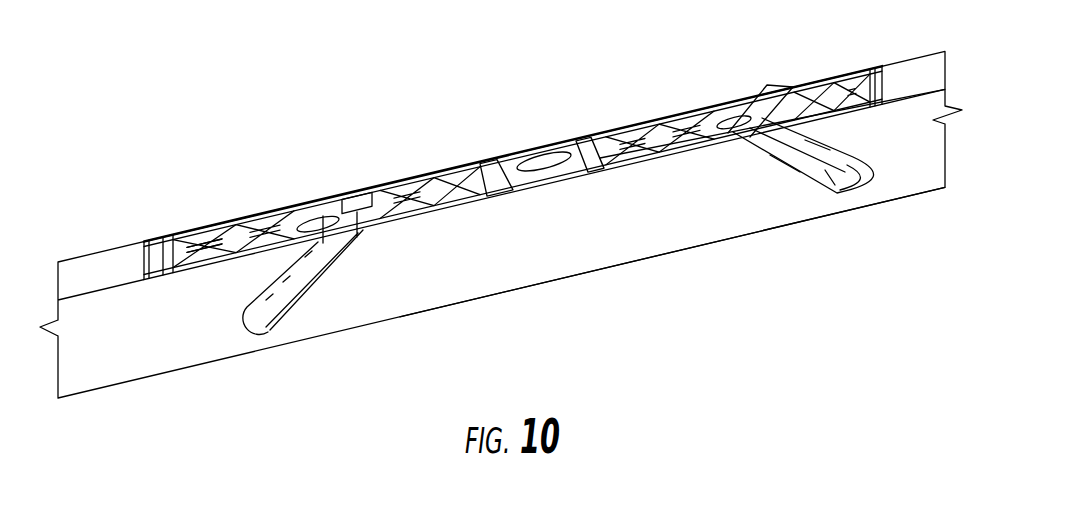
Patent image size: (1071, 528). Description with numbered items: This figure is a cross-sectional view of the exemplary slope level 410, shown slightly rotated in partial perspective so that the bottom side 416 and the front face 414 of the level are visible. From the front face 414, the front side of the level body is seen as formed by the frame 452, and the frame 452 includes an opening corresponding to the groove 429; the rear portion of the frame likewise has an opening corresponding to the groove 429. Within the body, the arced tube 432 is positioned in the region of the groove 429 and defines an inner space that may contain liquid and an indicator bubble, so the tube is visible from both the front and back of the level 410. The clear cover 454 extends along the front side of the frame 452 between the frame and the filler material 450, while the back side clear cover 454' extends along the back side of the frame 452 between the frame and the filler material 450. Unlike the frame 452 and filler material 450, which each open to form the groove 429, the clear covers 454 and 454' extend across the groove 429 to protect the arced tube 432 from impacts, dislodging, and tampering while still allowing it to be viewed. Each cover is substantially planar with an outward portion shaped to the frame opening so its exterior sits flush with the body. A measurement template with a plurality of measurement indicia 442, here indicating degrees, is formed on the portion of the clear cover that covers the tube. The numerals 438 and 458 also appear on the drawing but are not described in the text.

The slope level 410 is at (323, 404).
The front face 414 is at (638, 233).
The bottom side 416 is at (543, 287).
The groove/aperture 429 is at (287, 220).
The arced tube 432 is at (765, 102).
The end portion of arm 438 is at (822, 192).
The measurement indicia 442 is at (823, 132).
The filler material 450 is at (217, 248).
The frame 452 is at (170, 340).
The clear cover 454 is at (587, 237).
The back side clear cover 454' is at (487, 146).
The arm portion 458 is at (797, 173).